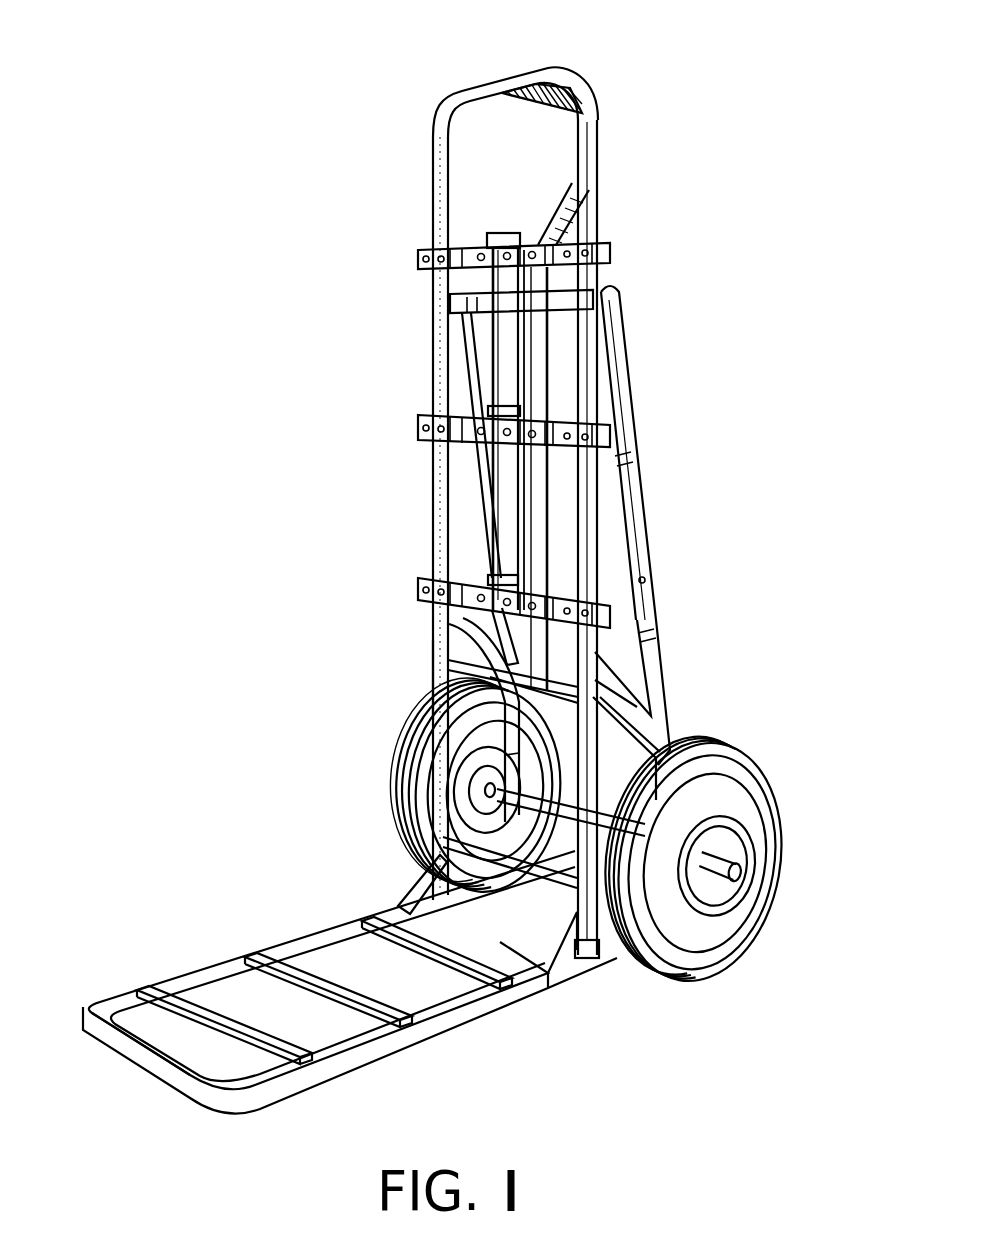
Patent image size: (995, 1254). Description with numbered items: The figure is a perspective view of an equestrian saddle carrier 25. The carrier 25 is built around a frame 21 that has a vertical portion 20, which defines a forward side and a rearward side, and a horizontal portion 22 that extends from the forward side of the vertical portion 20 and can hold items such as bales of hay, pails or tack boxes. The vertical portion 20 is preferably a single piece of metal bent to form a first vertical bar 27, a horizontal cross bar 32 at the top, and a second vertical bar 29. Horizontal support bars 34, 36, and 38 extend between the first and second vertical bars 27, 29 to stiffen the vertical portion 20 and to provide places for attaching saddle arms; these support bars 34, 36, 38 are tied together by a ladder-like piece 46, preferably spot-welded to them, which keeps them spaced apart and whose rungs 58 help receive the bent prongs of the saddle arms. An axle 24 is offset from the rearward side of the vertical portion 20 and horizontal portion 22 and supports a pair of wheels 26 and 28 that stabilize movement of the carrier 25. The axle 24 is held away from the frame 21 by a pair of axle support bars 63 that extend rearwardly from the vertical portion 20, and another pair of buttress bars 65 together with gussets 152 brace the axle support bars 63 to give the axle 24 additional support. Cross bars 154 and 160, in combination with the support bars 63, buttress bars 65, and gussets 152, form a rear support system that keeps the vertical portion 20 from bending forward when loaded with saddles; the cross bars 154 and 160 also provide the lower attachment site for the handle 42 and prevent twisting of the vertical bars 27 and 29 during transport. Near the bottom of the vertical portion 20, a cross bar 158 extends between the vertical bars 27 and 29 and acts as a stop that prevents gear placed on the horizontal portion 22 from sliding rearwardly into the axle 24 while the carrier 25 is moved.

The vertical portion 20 is at (440, 380).
The frame 21 is at (440, 682).
The horizontal portion 22 is at (436, 1027).
The axle 24 is at (610, 813).
The saddle carrier 25 is at (262, 678).
The wheel 26 is at (718, 962).
The first vertical bar 27 is at (587, 543).
The wheel 28 is at (410, 773).
The second vertical bar 29 is at (437, 192).
The horizontal cross bar 32 is at (524, 74).
The horizontal support bar 34 is at (612, 254).
The horizontal support bar 36 is at (612, 437).
The horizontal support bar 38 is at (612, 615).
The handle 42 is at (566, 225).
The ladder-like piece 46 is at (487, 334).
The rung 58 is at (503, 240).
The axle support bar 63 is at (478, 498).
The buttress bar 65 is at (462, 660).
The gusset 152 is at (455, 890).
The cross bar 154 is at (556, 303).
The cross bar 158 is at (465, 848).
The cross bar 160 is at (488, 603).